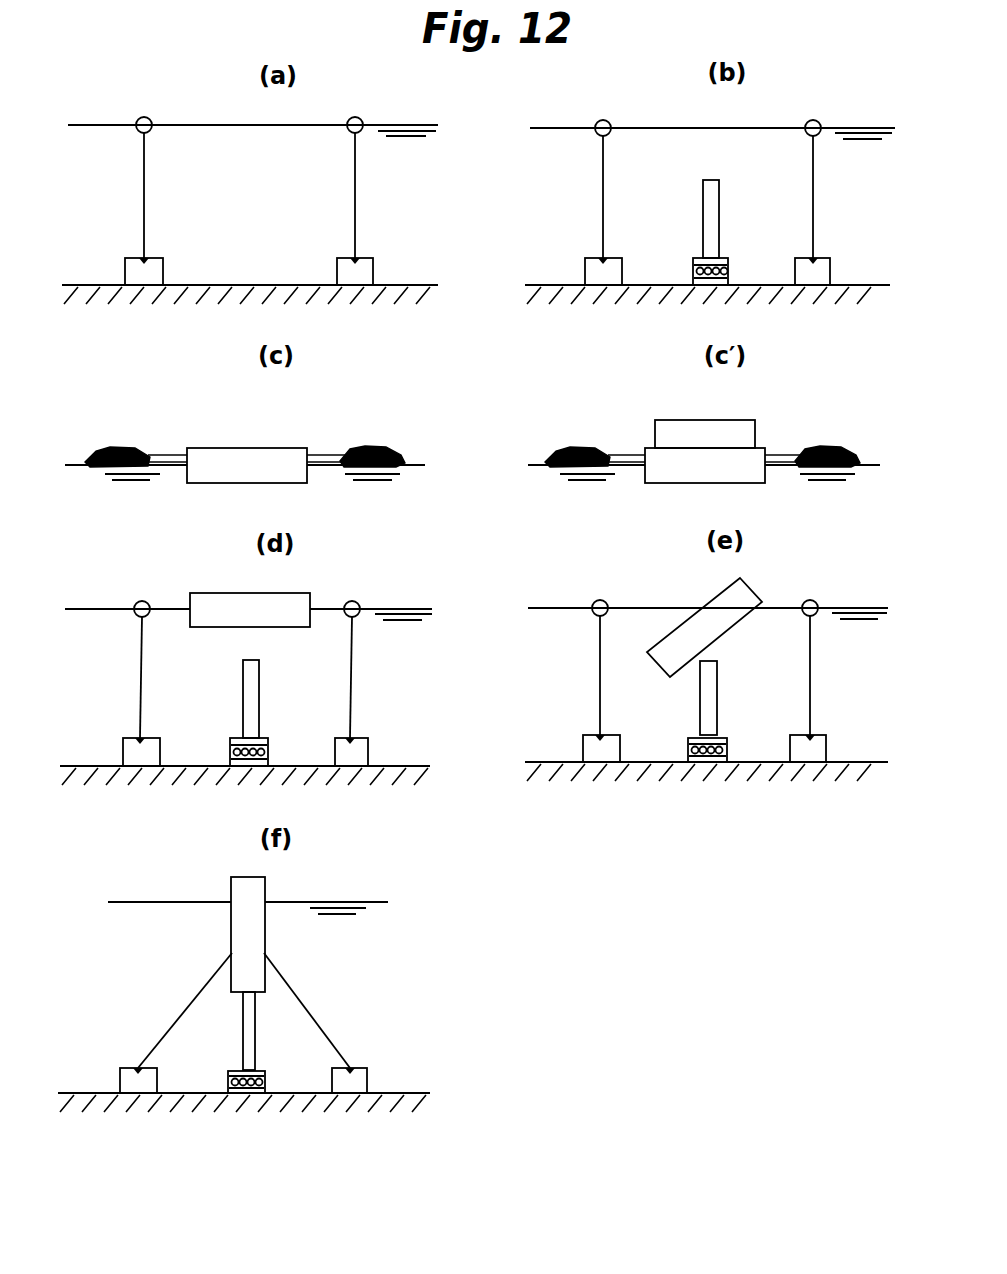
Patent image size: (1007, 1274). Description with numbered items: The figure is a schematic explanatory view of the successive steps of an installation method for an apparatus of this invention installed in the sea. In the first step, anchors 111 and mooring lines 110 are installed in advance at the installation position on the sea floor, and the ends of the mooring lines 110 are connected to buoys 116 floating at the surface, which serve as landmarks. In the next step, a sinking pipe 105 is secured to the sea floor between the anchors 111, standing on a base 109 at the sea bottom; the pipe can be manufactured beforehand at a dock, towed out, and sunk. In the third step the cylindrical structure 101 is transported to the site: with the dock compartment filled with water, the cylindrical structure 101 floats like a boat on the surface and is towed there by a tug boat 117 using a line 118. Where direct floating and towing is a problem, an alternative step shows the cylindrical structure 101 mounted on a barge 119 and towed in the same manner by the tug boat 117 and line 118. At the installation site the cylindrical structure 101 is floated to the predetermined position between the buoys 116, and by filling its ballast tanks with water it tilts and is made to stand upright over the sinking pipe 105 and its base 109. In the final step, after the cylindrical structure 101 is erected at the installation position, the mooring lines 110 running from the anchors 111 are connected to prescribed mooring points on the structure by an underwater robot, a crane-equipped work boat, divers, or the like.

The cylindrical structure 101 is at (735, 410).
The sinking pipe 105 is at (719, 212).
The base (foundation block) 109 is at (728, 268).
The mooring lines 110 is at (144, 210).
The anchors 111 is at (155, 270).
The buoys 116 is at (482, 352).
The tug boat 117 is at (94, 451).
The line 118 is at (172, 452).
The barge 119 is at (705, 465).